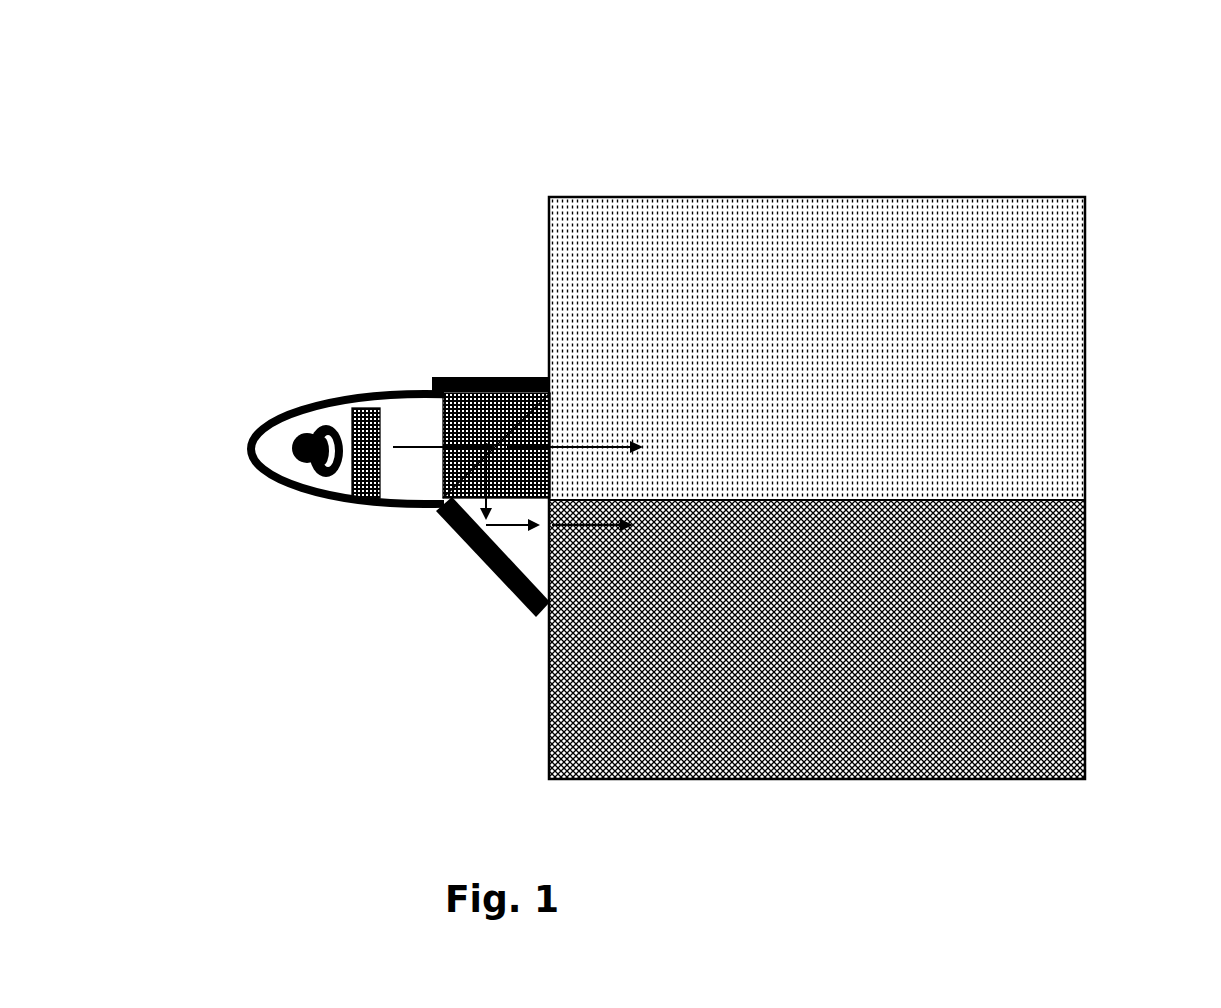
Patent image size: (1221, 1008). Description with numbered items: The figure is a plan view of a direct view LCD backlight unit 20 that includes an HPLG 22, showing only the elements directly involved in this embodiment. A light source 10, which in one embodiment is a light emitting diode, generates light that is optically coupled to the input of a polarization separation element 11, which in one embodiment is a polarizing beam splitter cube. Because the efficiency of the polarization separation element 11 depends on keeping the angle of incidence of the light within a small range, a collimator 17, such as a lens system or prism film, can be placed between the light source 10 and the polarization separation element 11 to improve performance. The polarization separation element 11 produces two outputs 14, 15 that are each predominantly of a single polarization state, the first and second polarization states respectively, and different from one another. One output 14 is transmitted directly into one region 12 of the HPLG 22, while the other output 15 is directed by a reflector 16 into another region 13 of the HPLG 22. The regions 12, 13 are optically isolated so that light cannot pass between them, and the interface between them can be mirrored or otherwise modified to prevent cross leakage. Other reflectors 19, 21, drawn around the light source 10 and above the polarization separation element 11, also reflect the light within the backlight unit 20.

The light source 10 is at (308, 448).
The polarization separation element 11 is at (498, 418).
The region of HPLG 12 is at (817, 348).
The region of HPLG 13 is at (817, 639).
The output 14 is at (518, 443).
The output 15 is at (556, 507).
The reflector 16 is at (482, 555).
The collimator 17 is at (366, 478).
The reflector 19 is at (247, 455).
The direct view LCD backlight unit 20 is at (498, 154).
The reflector 21 is at (437, 377).
The HPLG 22 is at (881, 488).